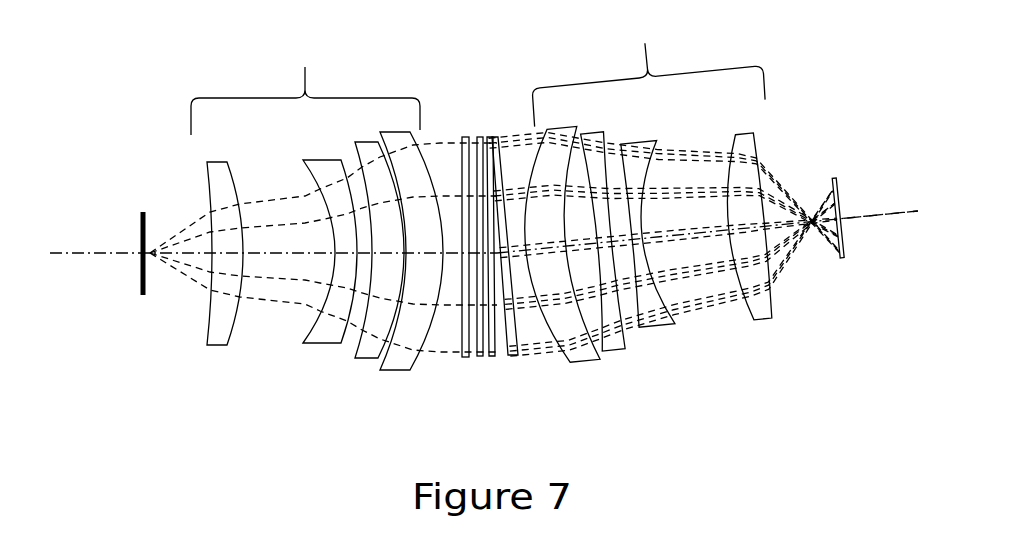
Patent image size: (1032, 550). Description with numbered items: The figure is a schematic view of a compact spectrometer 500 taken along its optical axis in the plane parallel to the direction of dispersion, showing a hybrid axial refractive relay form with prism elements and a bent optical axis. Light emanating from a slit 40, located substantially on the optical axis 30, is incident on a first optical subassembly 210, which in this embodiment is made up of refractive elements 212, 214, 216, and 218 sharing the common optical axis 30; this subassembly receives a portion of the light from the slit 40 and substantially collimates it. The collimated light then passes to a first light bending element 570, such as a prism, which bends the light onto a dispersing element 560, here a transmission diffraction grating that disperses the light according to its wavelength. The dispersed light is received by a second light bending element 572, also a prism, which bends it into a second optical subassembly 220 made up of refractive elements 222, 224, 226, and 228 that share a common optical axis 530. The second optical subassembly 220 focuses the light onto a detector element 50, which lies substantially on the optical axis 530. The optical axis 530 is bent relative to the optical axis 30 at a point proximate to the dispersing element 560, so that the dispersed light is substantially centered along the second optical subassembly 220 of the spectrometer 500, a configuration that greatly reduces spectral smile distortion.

The spectrometer 500 is at (112, 83).
The optical axis 30 is at (80, 255).
The slit 40 is at (138, 228).
The detector element 50 is at (843, 207).
The first optical subassembly 210 is at (305, 84).
The refractive element 212 is at (212, 346).
The refractive element 214 is at (325, 344).
The refractive element 216 is at (366, 362).
The refractive element 218 is at (400, 372).
The second optical subassembly 220 is at (646, 69).
The refractive element 222 is at (584, 366).
The refractive element 224 is at (619, 345).
The refractive element 226 is at (659, 328).
The refractive element 228 is at (762, 314).
The dispersing element 560 is at (492, 364).
The first light bending element 570 is at (465, 135).
The second light bending element 572 is at (493, 135).
The optical axis 530 is at (898, 214).